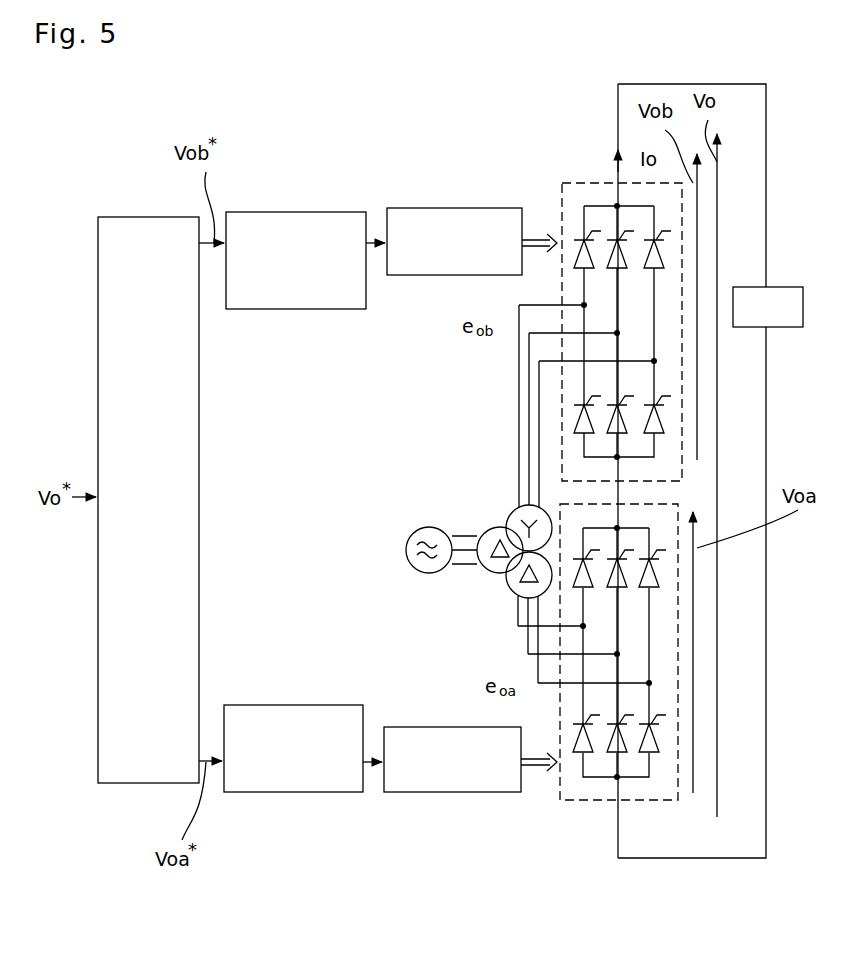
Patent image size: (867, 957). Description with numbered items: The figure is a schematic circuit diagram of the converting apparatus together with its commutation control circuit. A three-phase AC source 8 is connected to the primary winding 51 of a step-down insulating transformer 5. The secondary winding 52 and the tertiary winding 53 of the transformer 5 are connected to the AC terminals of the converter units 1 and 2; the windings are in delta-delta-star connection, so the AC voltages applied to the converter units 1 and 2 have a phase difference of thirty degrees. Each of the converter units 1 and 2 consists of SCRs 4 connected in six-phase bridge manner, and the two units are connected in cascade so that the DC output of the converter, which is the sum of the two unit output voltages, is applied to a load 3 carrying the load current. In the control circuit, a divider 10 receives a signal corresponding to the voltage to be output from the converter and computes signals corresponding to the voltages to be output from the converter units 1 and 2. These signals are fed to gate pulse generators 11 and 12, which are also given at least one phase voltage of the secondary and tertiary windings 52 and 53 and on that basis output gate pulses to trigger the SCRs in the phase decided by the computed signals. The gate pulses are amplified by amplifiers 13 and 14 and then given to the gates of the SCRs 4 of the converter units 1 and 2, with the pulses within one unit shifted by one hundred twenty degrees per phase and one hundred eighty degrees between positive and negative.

The converter unit 1 is at (597, 805).
The converter unit 2 is at (588, 178).
The load 3 is at (752, 327).
The SCR 4 is at (657, 425).
The step-down insulating transformer 5 is at (499, 556).
The three-phase AC source 8 is at (425, 528).
The divider 10 is at (124, 230).
The gate pulse generator 11 is at (305, 792).
The gate pulse generator 12 is at (330, 225).
The amplifier 13 is at (455, 793).
The amplifier 14 is at (487, 220).
The primary winding 51 is at (490, 528).
The secondary winding 52 is at (513, 596).
The tertiary winding 53 is at (515, 508).